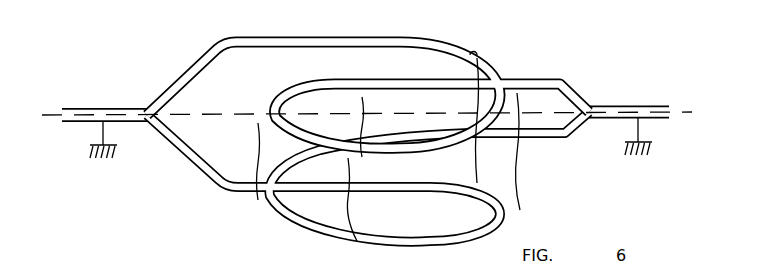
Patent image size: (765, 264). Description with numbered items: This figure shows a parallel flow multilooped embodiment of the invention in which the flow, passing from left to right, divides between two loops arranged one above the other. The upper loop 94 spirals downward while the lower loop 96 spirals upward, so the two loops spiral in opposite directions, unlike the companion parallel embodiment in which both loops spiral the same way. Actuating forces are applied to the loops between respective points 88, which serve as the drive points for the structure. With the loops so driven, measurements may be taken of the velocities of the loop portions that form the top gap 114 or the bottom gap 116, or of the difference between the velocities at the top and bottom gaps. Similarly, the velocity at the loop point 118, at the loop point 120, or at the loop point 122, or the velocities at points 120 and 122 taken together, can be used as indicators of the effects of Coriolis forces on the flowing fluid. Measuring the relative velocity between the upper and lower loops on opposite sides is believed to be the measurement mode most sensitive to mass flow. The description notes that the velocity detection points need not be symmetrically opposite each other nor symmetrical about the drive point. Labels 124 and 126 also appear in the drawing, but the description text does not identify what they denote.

The points 88 is at (347, 206).
The upper loop 94 is at (292, 98).
The lower loop 96 is at (302, 227).
The top gap 114 is at (403, 49).
The bottom gap 116 is at (407, 128).
The loop point 118 is at (403, 127).
The loop point 120 is at (258, 160).
The loop point 122 is at (527, 157).
The tie point 124 is at (473, 52).
The spacing between axis and lower run 126 is at (363, 124).